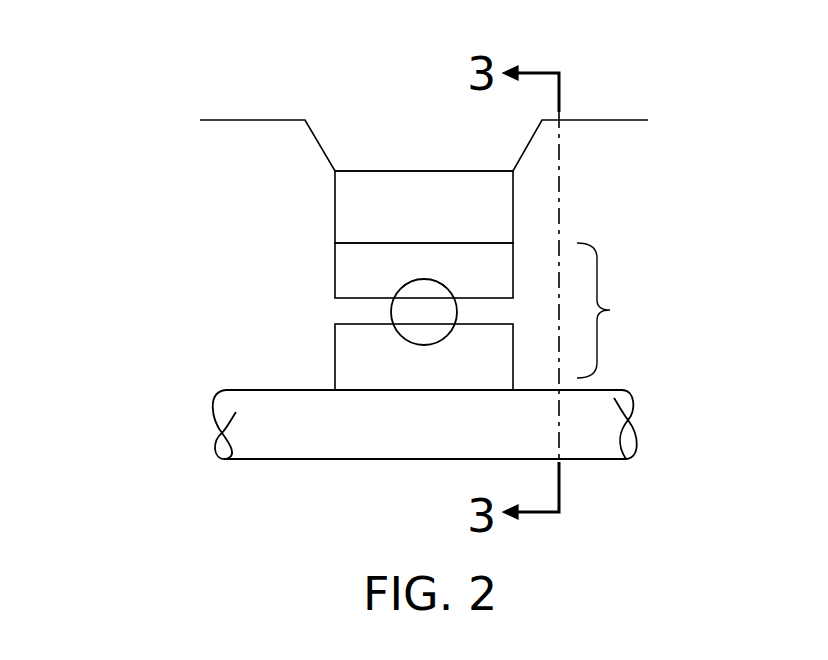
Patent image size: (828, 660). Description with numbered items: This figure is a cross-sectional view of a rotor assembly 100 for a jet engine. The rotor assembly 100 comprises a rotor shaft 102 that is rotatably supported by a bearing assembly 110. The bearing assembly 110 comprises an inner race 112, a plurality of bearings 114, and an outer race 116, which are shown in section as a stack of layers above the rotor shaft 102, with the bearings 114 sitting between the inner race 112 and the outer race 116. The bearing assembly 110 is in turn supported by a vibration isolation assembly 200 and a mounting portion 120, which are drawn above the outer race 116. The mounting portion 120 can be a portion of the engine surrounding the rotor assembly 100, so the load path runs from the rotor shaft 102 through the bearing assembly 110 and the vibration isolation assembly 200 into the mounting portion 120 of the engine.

The rotor assembly 100 is at (149, 263).
The rotor shaft 102 is at (449, 438).
The bearing assembly 110 is at (610, 310).
The inner race 112 is at (446, 377).
The bearings 114 is at (446, 327).
The outer race 116 is at (446, 276).
The mounting portion 120 is at (449, 147).
The vibration isolation assembly 200 is at (452, 223).